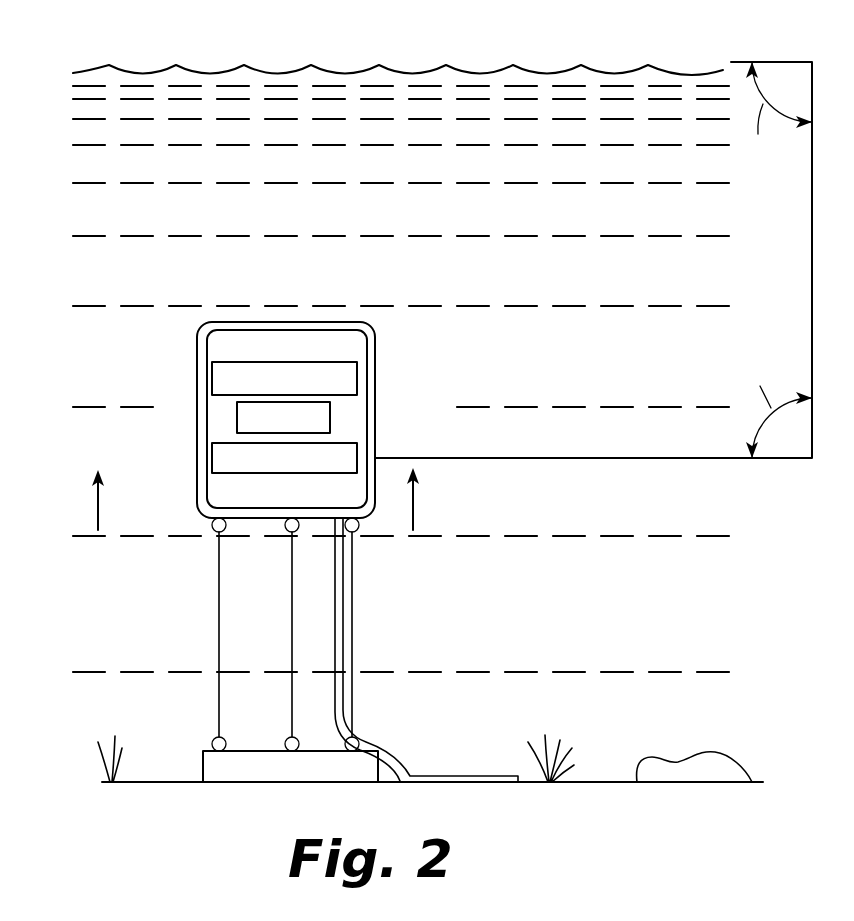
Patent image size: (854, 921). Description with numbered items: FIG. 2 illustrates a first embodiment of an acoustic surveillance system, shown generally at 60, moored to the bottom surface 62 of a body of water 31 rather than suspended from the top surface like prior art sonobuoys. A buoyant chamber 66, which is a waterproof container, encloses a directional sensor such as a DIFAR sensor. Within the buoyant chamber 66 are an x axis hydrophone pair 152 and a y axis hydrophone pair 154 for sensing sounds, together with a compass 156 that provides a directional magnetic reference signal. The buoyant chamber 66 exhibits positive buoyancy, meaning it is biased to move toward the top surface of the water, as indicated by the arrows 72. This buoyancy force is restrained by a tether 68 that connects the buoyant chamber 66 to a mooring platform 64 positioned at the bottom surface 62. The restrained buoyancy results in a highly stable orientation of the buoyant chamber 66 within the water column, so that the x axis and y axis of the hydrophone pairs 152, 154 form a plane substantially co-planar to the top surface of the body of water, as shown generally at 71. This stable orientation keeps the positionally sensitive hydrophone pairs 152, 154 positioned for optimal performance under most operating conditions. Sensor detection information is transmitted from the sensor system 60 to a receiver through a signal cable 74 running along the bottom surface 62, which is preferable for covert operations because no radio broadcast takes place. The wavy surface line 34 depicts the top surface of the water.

The body of water 31 is at (378, 78).
The body of water 34 is at (475, 72).
The acoustic surveillance system 60 is at (424, 291).
The buoyant chamber 66 is at (312, 322).
The x axis hydrophone pair 152 is at (357, 378).
The compass 156 is at (330, 417).
The y axis hydrophone pair 154 is at (212, 456).
The plane substantially co-planar to the top surface 71 is at (811, 267).
The arrow 72 is at (98, 506).
The tether 68 is at (219, 620).
The mooring platform 64 is at (203, 765).
The signal cable 74 is at (385, 742).
The bottom surface 62 is at (604, 780).